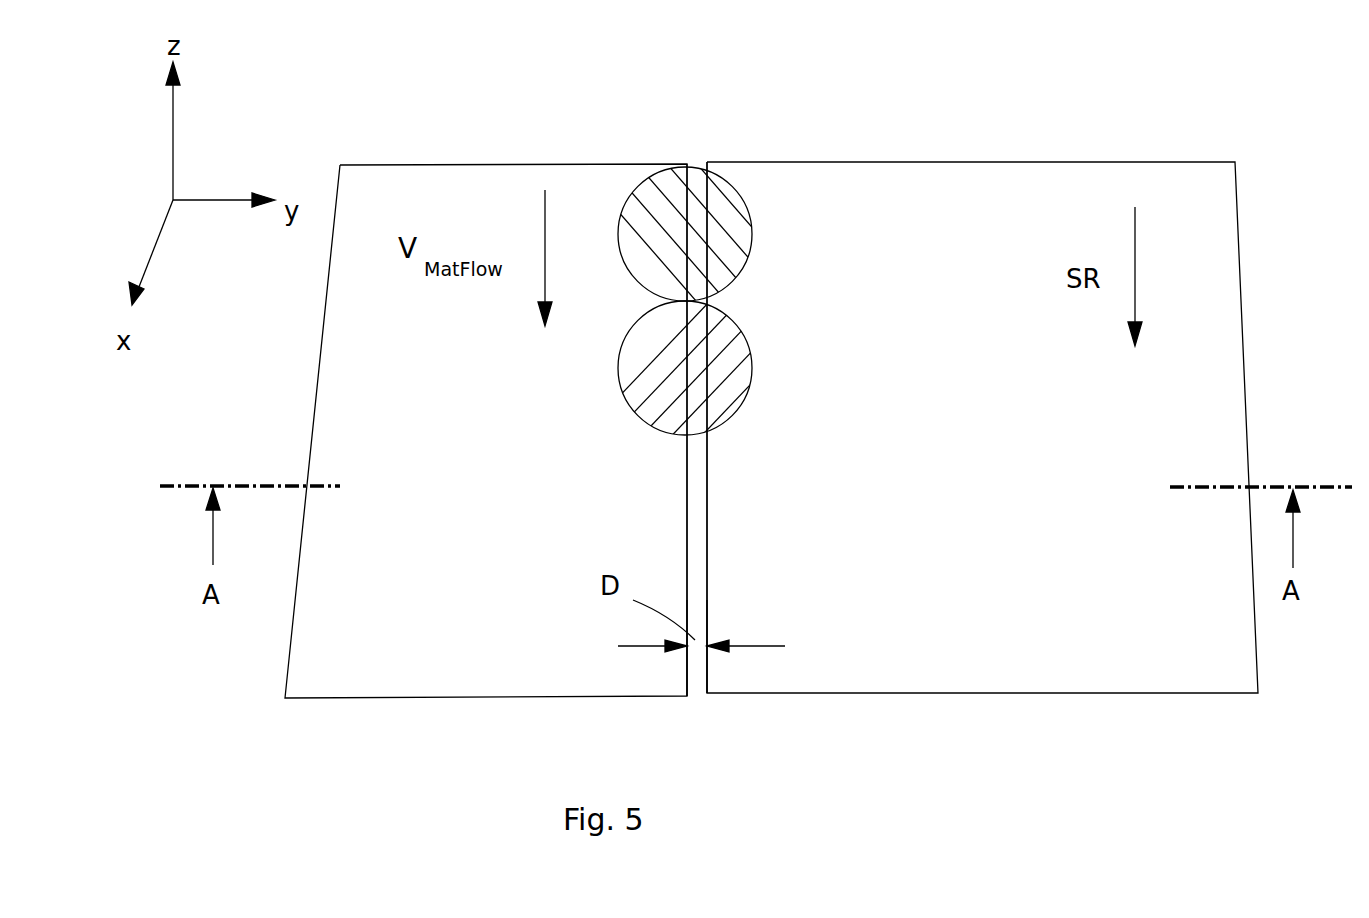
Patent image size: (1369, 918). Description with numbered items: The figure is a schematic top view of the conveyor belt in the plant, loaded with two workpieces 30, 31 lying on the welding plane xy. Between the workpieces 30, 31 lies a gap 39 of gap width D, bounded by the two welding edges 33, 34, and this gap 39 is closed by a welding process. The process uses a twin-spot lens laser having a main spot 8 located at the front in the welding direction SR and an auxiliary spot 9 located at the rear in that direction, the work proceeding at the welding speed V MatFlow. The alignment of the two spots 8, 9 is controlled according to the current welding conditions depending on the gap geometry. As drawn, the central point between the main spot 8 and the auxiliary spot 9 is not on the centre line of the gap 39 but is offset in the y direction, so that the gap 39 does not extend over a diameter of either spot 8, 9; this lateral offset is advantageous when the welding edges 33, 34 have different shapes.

The main spot 8 is at (735, 365).
The auxiliary spot 9 is at (733, 235).
The workpiece 30 is at (462, 567).
The workpiece 31 is at (1058, 538).
The welding edge 33 is at (687, 505).
The welding edge 34 is at (707, 510).
The gap 39 is at (697, 675).